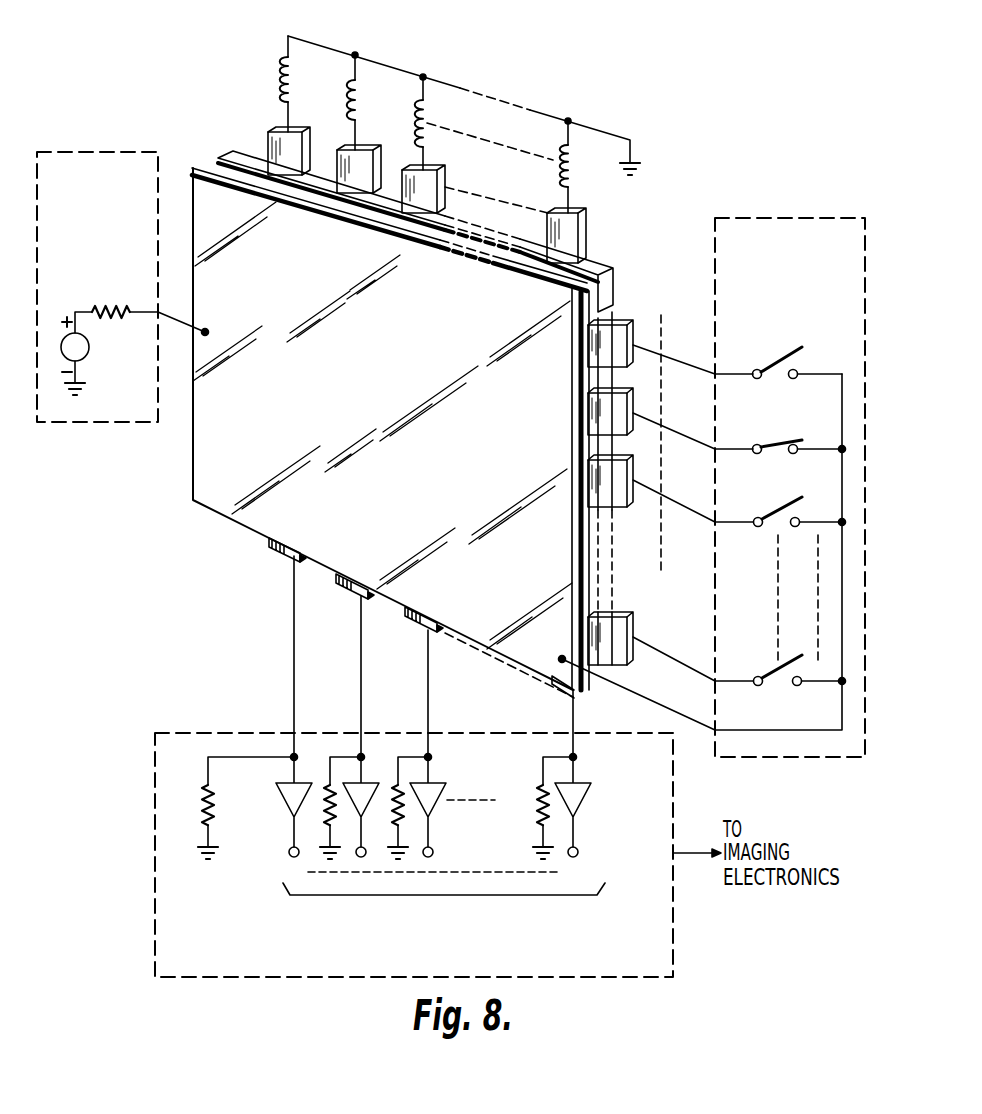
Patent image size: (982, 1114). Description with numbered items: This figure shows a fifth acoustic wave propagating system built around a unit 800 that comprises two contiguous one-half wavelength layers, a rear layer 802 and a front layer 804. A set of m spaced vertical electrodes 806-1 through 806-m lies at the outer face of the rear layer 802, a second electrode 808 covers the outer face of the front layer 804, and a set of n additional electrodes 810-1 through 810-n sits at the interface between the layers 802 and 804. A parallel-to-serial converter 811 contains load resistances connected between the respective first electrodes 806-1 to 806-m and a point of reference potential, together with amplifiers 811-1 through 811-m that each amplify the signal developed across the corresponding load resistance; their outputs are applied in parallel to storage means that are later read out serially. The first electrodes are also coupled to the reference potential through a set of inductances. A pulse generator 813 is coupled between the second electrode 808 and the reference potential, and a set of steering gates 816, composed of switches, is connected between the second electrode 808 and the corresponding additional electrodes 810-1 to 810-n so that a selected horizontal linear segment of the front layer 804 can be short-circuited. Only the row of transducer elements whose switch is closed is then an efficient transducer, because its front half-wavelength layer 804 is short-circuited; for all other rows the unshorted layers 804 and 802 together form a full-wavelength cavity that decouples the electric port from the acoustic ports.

The unit 800 is at (190, 106).
The rear layer 802 is at (603, 272).
The front layer 804 is at (194, 165).
The first electrode 806-1 is at (268, 140).
The first electrode 806-m is at (588, 240).
The second electrode 808 is at (386, 410).
The additional electrode 810-1 is at (617, 325).
The additional electrode 810-n is at (620, 617).
The parallel-to-serial converter 811 is at (204, 732).
The amplifier 811-1 is at (294, 808).
The amplifier 811-m is at (576, 810).
The pulse generator 813 is at (116, 250).
The steering gates 816 is at (806, 314).